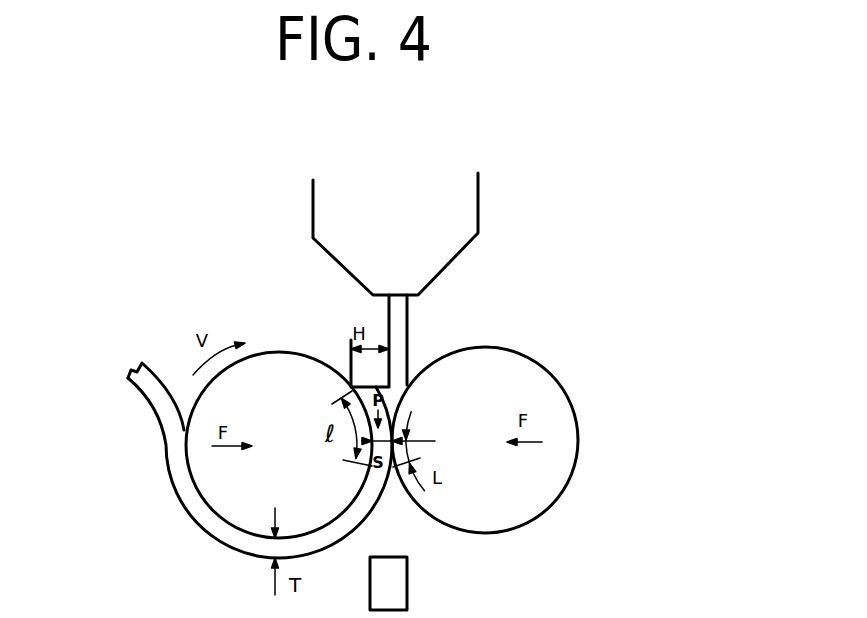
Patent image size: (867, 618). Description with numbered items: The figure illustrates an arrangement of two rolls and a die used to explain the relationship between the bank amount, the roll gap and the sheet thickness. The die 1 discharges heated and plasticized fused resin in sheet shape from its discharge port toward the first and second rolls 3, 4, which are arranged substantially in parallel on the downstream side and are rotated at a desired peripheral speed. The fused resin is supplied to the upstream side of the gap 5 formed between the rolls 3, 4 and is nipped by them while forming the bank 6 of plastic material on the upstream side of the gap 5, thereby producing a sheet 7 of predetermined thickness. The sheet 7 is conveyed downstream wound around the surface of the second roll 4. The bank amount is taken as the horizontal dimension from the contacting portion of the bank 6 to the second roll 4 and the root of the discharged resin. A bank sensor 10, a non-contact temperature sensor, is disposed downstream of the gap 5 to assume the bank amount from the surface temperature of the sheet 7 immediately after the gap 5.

The die 1 is at (458, 222).
The first roll 3 is at (517, 505).
The second roll 4 is at (270, 362).
The gap 5 is at (389, 487).
The bank 6 is at (357, 383).
The sheet 7 is at (188, 520).
The bank sensor 10 is at (402, 588).